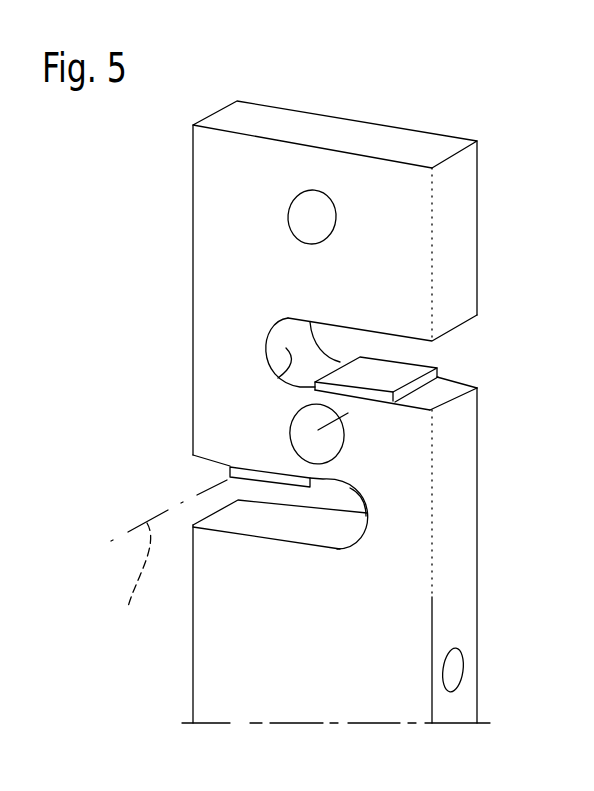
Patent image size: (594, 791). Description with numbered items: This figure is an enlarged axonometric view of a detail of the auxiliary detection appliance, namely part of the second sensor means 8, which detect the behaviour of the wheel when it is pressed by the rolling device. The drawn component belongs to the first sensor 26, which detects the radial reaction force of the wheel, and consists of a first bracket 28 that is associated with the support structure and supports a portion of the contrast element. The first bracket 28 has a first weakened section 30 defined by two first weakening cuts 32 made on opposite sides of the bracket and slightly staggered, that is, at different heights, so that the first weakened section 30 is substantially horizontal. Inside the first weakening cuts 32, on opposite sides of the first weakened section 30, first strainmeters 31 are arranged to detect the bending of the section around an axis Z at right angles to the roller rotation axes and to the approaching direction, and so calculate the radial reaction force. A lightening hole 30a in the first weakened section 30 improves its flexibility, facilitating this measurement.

The second sensor means 8 is at (393, 93).
The first sensor 26 is at (174, 220).
The first bracket 28 is at (395, 577).
The first weakened section 30 is at (311, 461).
The lightening hole 30a is at (345, 452).
The first strainmeter 31 is at (387, 370).
The first weakening cut 32 is at (273, 378).
The axis Z is at (136, 580).